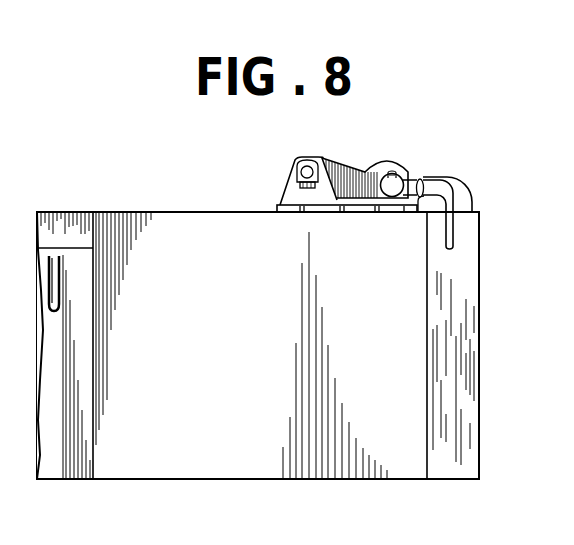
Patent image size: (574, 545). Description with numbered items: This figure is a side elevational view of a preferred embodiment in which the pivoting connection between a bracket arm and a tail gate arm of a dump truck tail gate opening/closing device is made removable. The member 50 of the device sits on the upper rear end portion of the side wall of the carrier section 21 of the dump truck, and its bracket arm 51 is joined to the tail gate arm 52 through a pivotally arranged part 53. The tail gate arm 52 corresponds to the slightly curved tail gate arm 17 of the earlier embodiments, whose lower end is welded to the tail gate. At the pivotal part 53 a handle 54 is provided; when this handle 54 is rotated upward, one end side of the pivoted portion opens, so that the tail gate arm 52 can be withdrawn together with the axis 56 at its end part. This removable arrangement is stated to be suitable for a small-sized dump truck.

The tail gate arm 17 is at (470, 406).
The carrier section 21 is at (184, 470).
The member 50 is at (401, 173).
The bracket arm 51 is at (346, 172).
The tail gate arm 52 is at (448, 181).
The pivotally arranged part 53 is at (408, 172).
The handle 54 is at (455, 228).
The axis 56 is at (387, 168).